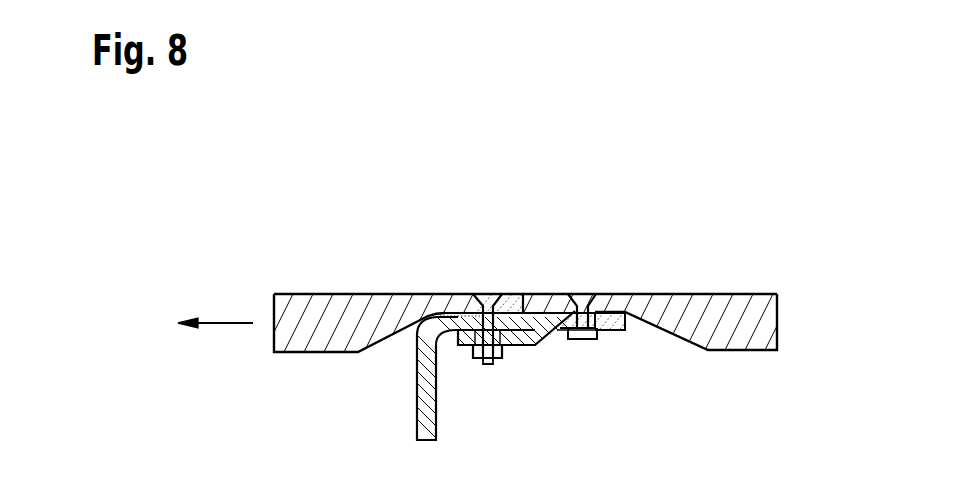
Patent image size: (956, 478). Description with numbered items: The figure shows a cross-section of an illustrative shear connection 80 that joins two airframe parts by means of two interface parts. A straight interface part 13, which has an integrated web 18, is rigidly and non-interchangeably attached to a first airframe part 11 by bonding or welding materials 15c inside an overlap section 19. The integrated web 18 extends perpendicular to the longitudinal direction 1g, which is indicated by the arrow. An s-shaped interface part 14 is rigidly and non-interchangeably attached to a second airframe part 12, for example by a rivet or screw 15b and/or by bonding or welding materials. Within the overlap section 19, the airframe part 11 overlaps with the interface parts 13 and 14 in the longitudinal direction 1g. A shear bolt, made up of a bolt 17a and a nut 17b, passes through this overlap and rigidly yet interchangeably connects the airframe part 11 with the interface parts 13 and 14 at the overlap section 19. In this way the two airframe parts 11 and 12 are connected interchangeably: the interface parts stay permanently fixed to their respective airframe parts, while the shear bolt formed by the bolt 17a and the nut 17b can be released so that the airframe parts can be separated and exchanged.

The airframe part 11 is at (320, 300).
The airframe part 12 is at (706, 300).
The straight interface part 13 is at (417, 345).
The s-shaped interface part 14 is at (612, 322).
The rivet or screw 15b is at (577, 340).
The bonding or welding materials 15c is at (445, 311).
The bolt 17a is at (490, 365).
The nut 17b is at (502, 352).
The integrated web 18 is at (422, 418).
The overlap section 19 is at (530, 287).
The shear connection 80 is at (563, 215).
The longitudinal direction 1g is at (223, 323).